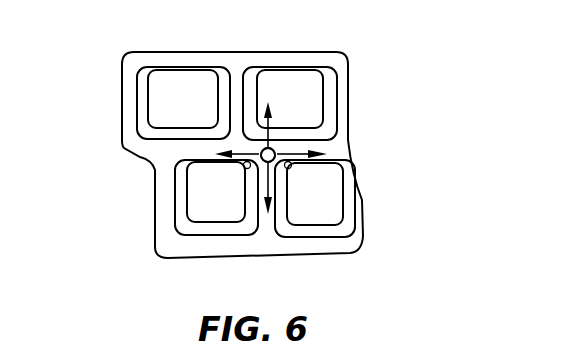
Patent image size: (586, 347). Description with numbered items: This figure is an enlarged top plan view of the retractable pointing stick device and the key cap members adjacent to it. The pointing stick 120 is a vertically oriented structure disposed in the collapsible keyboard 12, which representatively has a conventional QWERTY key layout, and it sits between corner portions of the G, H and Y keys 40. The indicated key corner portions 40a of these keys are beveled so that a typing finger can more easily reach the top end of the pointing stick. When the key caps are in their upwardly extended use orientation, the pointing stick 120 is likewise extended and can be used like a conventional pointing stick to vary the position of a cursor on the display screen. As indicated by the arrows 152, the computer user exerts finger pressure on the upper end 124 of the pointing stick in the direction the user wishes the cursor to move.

The collapsible keyboard 12 is at (246, 38).
The keys 40 is at (136, 90).
The key corner portions 40a is at (246, 169).
The pointing stick 120 is at (286, 143).
The upper end of the pointing stick 124 is at (271, 148).
The arrows 152 is at (236, 150).